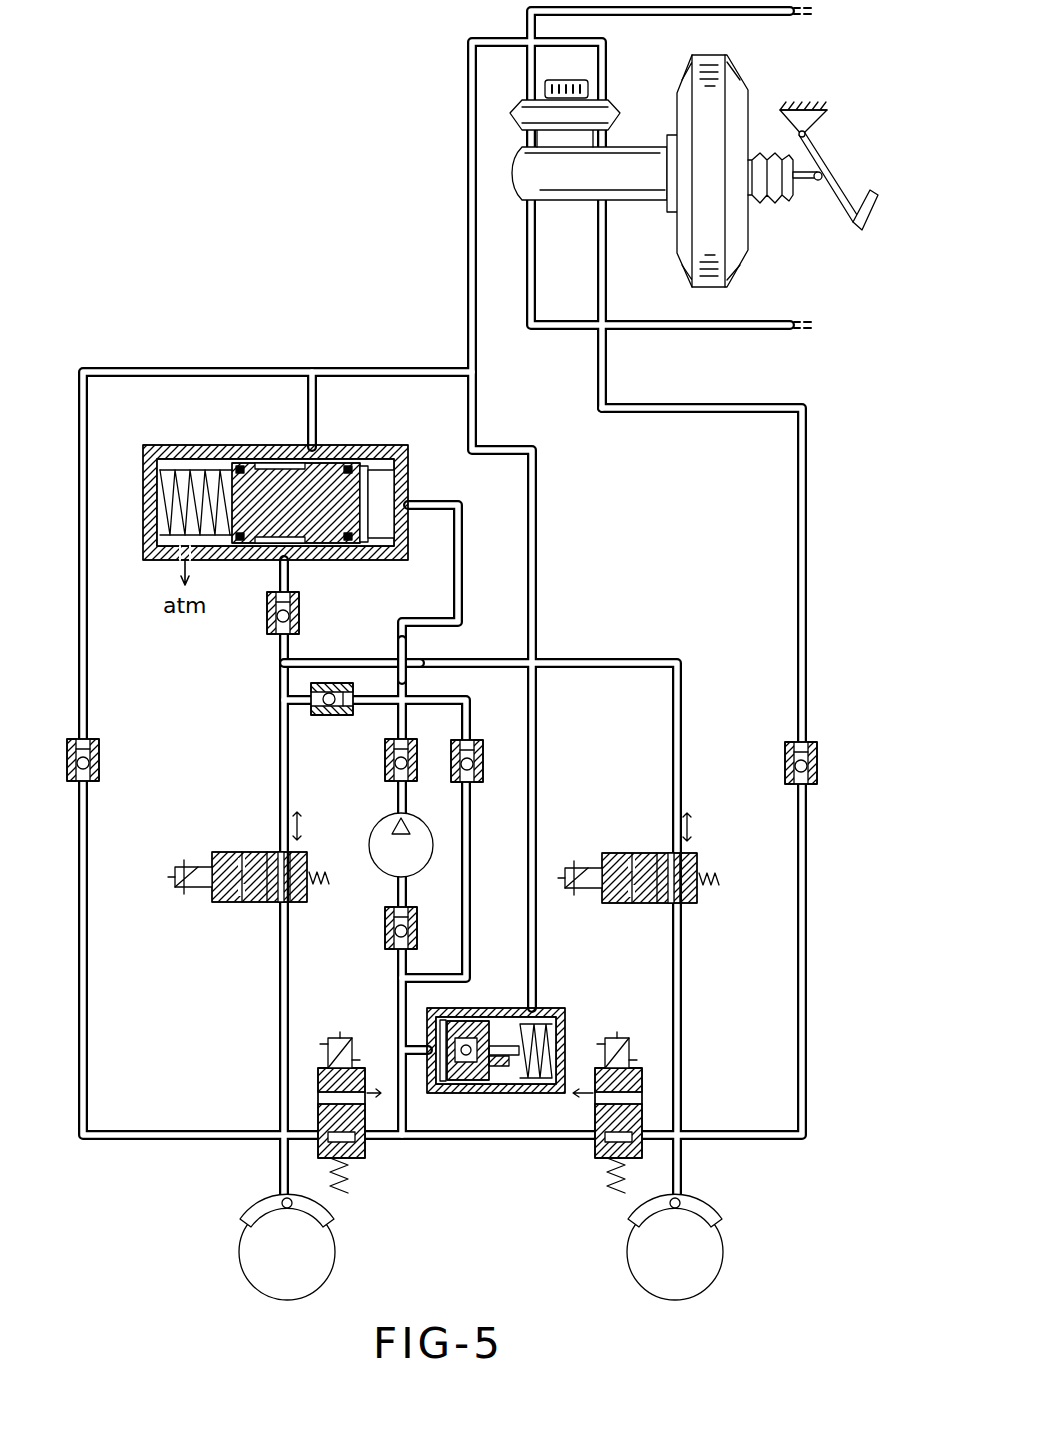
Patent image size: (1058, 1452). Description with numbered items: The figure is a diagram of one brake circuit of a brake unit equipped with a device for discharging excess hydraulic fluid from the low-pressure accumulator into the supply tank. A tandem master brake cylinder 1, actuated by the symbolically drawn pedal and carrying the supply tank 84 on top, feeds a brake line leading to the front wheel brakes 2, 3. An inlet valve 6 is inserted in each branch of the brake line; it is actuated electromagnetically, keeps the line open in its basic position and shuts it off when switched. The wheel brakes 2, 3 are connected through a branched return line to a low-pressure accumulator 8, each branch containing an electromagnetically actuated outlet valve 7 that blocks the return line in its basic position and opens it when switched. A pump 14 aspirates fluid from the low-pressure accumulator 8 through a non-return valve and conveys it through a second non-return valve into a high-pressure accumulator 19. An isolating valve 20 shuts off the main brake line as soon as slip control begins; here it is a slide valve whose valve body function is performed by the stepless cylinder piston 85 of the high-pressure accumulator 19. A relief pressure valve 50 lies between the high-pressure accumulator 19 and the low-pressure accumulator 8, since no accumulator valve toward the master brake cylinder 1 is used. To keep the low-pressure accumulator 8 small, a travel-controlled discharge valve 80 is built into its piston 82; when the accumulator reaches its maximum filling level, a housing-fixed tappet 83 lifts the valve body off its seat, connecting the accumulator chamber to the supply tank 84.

The tandem master brake cylinder 1 is at (585, 142).
The front wheel brake 2 is at (333, 1259).
The front wheel brake 3 is at (636, 1254).
The inlet valve 6 is at (255, 902).
The outlet valve 7 is at (366, 1152).
The low-pressure accumulator 8 is at (509, 1039).
The pump 14 is at (375, 831).
The high-pressure accumulator 19 is at (414, 498).
The isolating valve 20 is at (275, 475).
The relief pressure valve 50 is at (482, 768).
The discharge valve 80 is at (478, 1084).
The piston of the low-pressure accumulator 82 is at (478, 1012).
The tappet 83 is at (536, 1084).
The supply tank 84 is at (610, 112).
The cylinder piston 85 is at (243, 470).